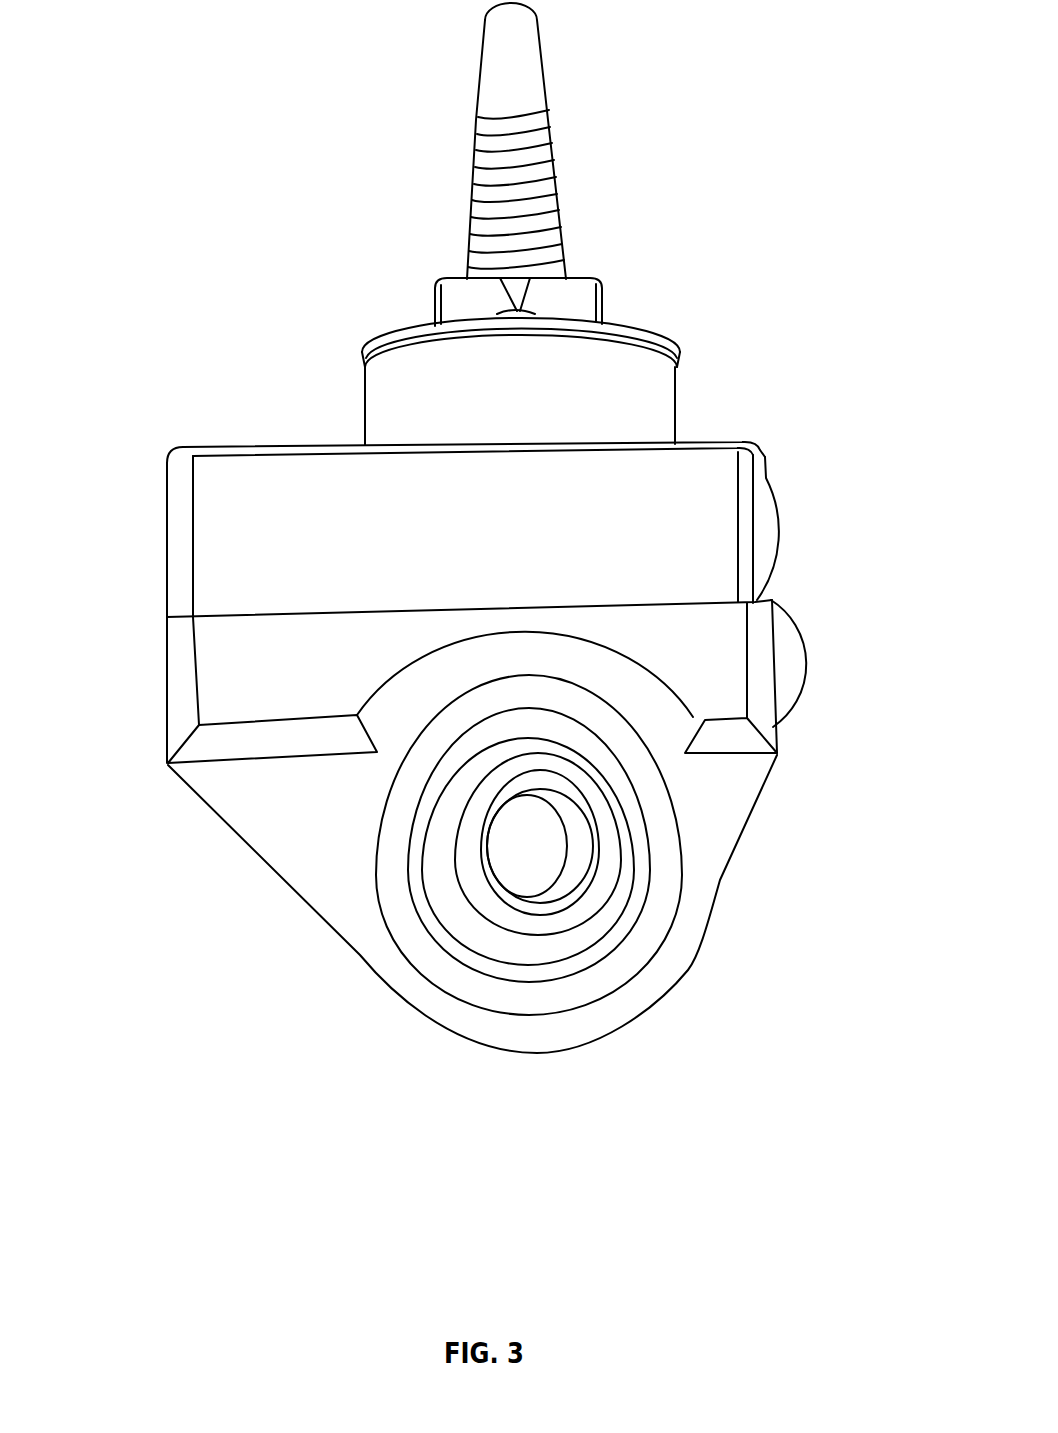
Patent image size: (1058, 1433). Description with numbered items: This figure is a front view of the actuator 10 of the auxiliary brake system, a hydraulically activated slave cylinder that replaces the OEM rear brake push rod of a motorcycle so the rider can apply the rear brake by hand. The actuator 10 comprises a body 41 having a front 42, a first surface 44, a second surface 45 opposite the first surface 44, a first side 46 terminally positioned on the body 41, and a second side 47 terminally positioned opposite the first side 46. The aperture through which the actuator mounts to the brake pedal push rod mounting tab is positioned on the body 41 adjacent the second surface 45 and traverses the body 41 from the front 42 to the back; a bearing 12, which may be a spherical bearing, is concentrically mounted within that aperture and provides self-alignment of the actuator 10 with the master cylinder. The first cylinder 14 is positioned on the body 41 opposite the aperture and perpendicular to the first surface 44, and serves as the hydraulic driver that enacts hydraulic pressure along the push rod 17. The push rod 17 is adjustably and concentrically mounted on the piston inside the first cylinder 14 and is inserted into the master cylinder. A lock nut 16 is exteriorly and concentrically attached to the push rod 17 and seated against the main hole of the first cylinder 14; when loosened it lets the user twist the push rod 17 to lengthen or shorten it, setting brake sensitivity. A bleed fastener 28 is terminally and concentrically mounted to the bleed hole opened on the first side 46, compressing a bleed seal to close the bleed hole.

The actuator 10 is at (474, 579).
The bearing 12 is at (465, 862).
The first cylinder 14 is at (645, 403).
The lock nut 16 is at (582, 300).
The push rod 17 is at (507, 65).
The bleed fastener 28 is at (785, 662).
The body 41 is at (187, 688).
The front 42 is at (526, 565).
The first surface 44 is at (278, 447).
The second surface 45 is at (688, 973).
The first side 46 is at (763, 692).
The second side 47 is at (172, 557).